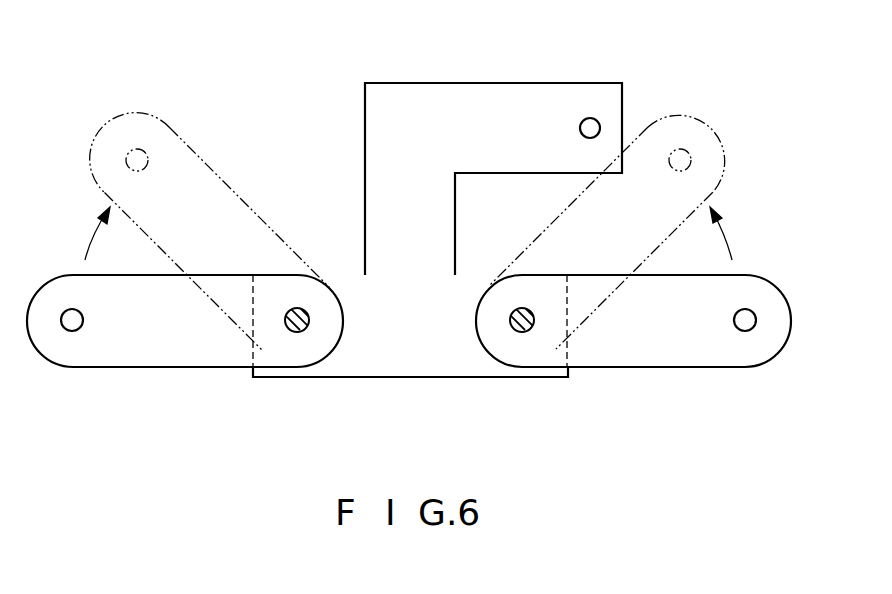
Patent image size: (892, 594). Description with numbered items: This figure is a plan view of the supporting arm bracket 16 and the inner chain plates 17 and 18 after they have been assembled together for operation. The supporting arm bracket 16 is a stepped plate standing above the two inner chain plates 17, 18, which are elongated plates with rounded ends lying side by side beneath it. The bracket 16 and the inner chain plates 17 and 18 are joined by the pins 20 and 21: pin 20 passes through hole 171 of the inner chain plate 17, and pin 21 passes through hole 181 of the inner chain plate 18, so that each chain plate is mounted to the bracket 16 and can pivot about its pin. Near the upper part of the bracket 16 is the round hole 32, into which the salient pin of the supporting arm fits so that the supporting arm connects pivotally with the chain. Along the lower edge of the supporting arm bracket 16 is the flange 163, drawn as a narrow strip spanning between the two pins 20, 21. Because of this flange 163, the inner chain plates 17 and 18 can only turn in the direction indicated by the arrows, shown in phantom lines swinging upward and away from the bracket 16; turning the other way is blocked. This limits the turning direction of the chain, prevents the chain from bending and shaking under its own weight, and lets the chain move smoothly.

The supporting arm bracket 16 is at (380, 205).
The round hole 32 is at (592, 118).
The inner chain plate 17 is at (133, 357).
The inner chain plate 18 is at (709, 358).
The flange 163 is at (370, 372).
The pin 20 is at (297, 332).
The pin 21 is at (520, 333).
The hole 171 is at (287, 325).
The hole 181 is at (530, 325).